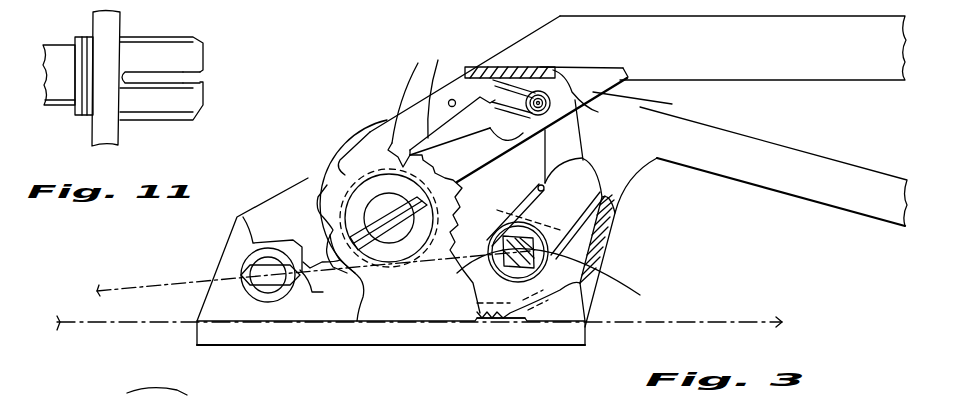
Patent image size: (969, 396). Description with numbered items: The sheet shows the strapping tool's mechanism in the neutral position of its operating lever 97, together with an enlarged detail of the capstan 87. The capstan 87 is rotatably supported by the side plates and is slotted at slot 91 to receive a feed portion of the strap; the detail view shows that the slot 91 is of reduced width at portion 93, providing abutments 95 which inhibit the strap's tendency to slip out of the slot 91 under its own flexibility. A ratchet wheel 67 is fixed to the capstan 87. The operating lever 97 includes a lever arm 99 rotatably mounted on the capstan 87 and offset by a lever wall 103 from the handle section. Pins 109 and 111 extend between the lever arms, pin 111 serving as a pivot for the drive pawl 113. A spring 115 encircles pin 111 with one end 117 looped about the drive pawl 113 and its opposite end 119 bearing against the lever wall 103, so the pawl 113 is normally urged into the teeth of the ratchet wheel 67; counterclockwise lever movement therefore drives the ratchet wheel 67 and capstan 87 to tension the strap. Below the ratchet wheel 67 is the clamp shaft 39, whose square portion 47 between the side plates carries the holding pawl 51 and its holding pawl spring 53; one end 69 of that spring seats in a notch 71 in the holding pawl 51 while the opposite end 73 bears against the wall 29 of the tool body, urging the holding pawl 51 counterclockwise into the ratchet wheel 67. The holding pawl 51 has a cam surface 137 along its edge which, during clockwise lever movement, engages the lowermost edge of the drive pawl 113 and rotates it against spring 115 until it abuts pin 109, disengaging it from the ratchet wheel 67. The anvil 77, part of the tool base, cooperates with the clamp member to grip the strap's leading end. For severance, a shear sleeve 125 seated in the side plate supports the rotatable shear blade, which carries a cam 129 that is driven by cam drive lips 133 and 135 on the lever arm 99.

In FIG. 3, the wall of the tool body 29 is at (615, 230).
In FIG. 3, the clamp shaft 39 is at (468, 260).
In FIG. 3, the portion of the clamp shaft 47 is at (590, 290).
In FIG. 3, the holding pawl 51 is at (583, 166).
In FIG. 3, the holding pawl spring 53 is at (590, 250).
In FIG. 3, the ratchet wheel 67 is at (411, 127).
In FIG. 3, the end of the holding pawl spring 69 is at (528, 212).
In FIG. 3, the notch 71 is at (546, 190).
In FIG. 3, the opposite end of the holding pawl spring 73 is at (623, 213).
In FIG. 3, the anvil 77 is at (507, 326).
In FIG. 11, the capstan 87 is at (67, 60).
In FIG. 3, the capstan 87 is at (358, 200).
In FIG. 11, the slot 91 is at (148, 72).
In FIG. 11, the reduced width portion of the slot 93 is at (160, 84).
In FIG. 11, the abutments 95 is at (180, 77).
In FIG. 3, the operating lever 97 is at (746, 64).
In FIG. 3, the lever arm 99 is at (400, 123).
In FIG. 3, the lever wall 103 is at (560, 72).
In FIG. 3, the pin 109 is at (453, 99).
In FIG. 3, the pin 111 is at (540, 92).
In FIG. 3, the drive pawl 113 is at (427, 127).
In FIG. 3, the spring 115 is at (618, 88).
In FIG. 3, the end of the spring 117 is at (483, 136).
In FIG. 3, the opposite end of the spring 119 is at (520, 85).
In FIG. 3, the shear sleeve 125 is at (241, 258).
In FIG. 3, the cam 129 is at (300, 265).
In FIG. 3, the cam drive lip 133 is at (310, 217).
In FIG. 3, the cam drive lip 135 is at (323, 292).
In FIG. 3, the cam surface 137 is at (530, 140).